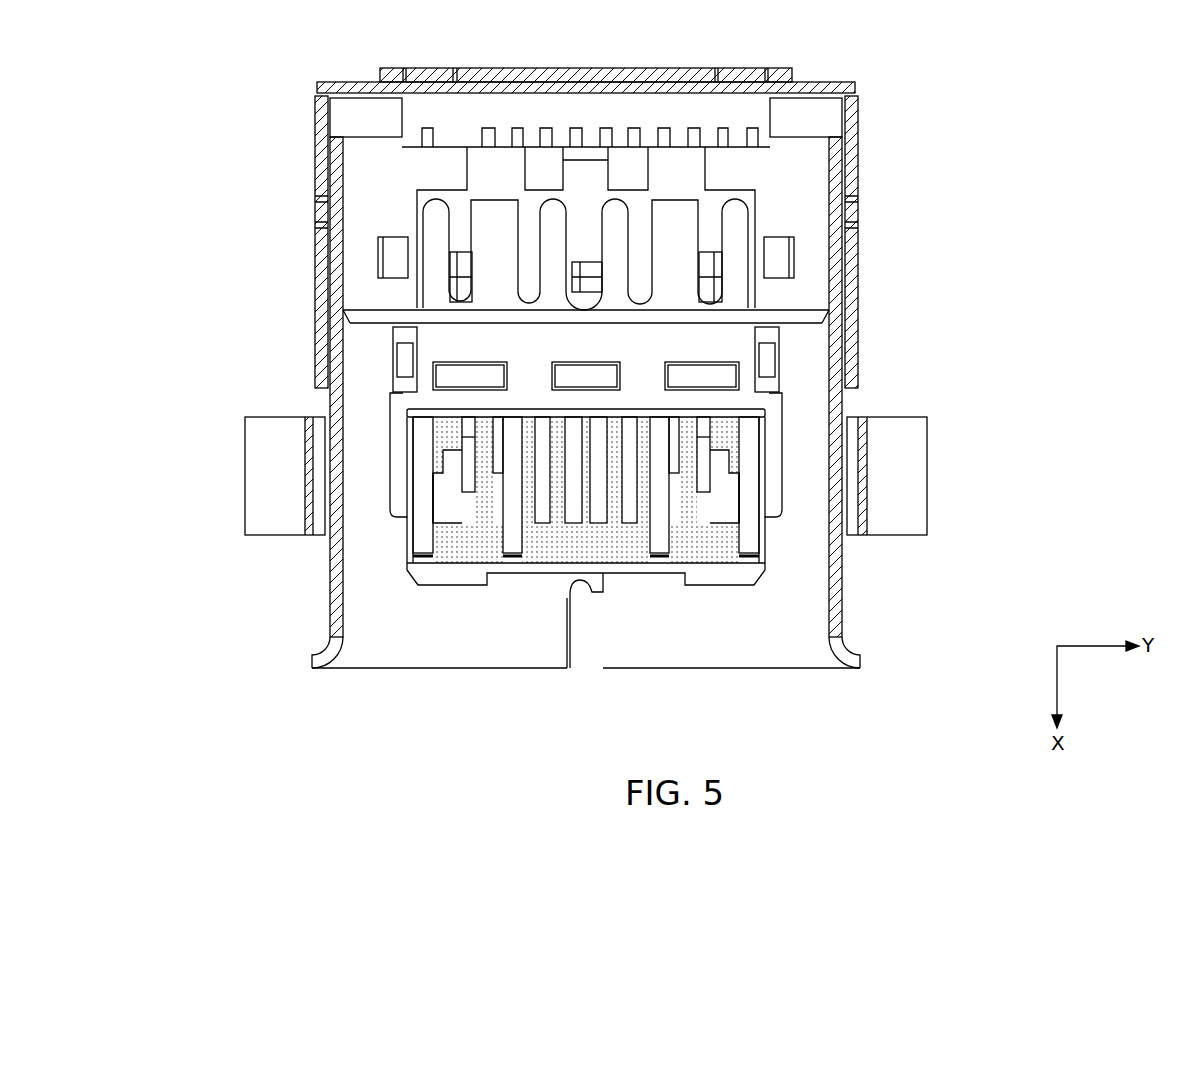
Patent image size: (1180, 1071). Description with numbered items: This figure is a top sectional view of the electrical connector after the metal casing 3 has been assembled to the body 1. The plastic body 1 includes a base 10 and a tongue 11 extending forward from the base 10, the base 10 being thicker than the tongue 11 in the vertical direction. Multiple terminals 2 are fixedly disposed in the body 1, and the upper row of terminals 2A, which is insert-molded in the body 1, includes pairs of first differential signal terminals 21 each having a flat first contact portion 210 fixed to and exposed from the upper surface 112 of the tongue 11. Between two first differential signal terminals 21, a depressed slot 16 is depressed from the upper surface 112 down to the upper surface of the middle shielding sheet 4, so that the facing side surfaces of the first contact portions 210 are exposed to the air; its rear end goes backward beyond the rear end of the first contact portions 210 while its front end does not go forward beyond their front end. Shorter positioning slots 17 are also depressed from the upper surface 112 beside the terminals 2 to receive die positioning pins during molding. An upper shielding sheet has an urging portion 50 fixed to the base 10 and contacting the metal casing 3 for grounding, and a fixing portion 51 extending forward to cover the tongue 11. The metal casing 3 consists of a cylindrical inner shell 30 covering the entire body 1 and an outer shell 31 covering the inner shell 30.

The body 1 is at (352, 241).
The terminals 2 is at (420, 540).
The upper row of terminals 2A is at (747, 538).
The metal casing 3 is at (355, 68).
The middle shielding sheet 4 is at (400, 408).
The base 10 is at (812, 178).
The tongue 11 is at (590, 590).
The upper surface 112 is at (553, 565).
The depressed slot 16 is at (460, 440).
The positioning slots 17 is at (450, 483).
The first differential signal terminals 21 is at (455, 512).
The inner shell 30 is at (336, 155).
The outer shell 31 is at (322, 120).
The urging portion 50 is at (738, 214).
The fixing portion 51 is at (740, 353).
The first contact portion 210 is at (440, 520).